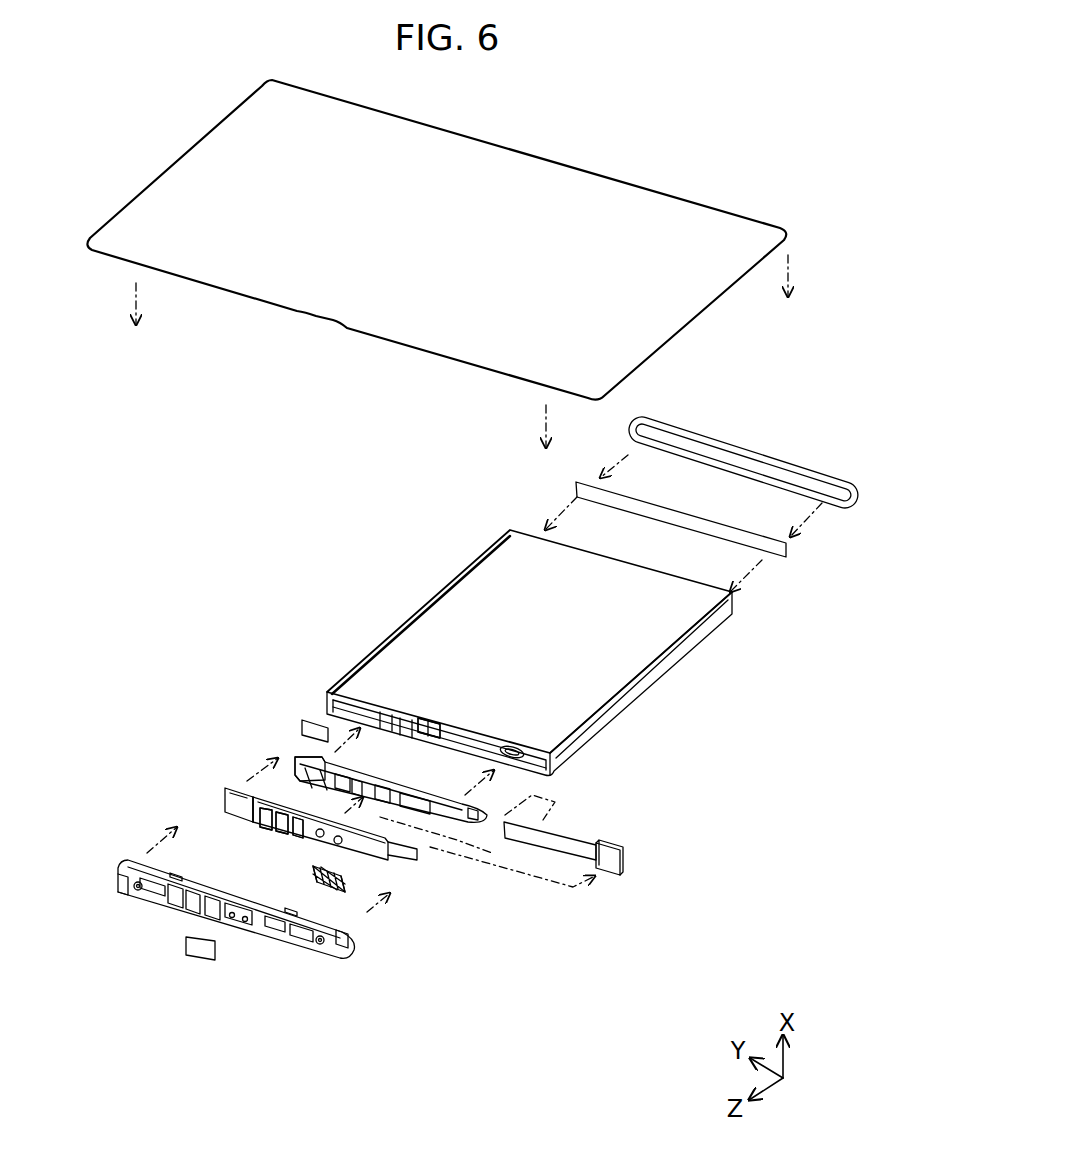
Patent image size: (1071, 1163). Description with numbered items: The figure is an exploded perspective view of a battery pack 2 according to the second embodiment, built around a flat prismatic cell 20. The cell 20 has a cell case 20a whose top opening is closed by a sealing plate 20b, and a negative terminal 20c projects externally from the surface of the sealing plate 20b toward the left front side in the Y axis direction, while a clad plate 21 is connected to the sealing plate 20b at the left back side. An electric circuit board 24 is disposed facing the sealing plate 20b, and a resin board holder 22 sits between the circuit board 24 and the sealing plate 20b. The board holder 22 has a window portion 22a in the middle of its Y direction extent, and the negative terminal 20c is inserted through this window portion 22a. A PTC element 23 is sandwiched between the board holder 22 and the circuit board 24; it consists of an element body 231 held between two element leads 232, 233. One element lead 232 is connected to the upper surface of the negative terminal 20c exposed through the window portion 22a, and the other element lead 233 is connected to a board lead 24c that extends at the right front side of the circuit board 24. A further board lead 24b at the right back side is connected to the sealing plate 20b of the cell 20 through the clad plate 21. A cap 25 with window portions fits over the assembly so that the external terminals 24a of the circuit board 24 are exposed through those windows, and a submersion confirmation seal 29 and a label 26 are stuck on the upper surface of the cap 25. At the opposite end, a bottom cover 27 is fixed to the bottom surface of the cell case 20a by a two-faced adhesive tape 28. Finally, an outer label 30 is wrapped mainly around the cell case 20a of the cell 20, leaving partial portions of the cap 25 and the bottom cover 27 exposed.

The battery pack 2 is at (653, 100).
The outer label 30 is at (560, 160).
The bottom cover 27 is at (747, 450).
The two-faced adhesive tape 28 is at (740, 535).
The cell 20 is at (642, 673).
The cell case 20a is at (556, 724).
The sealing plate 20b is at (333, 702).
The negative terminal 20c is at (432, 727).
The clad plate 21 is at (298, 722).
The board holder 22 is at (453, 810).
The window portion 22a is at (310, 780).
The electric circuit board 24 is at (377, 850).
The external terminals 24a is at (296, 833).
The board lead 24b is at (250, 815).
The board lead 24c is at (413, 853).
The PTC element 23 is at (634, 837).
The element body 231 is at (600, 850).
The element lead 232 is at (567, 843).
The element lead 233 is at (651, 863).
The cap 25 is at (310, 942).
The label 26 is at (200, 945).
The submersion confirmation seal 29 is at (320, 887).